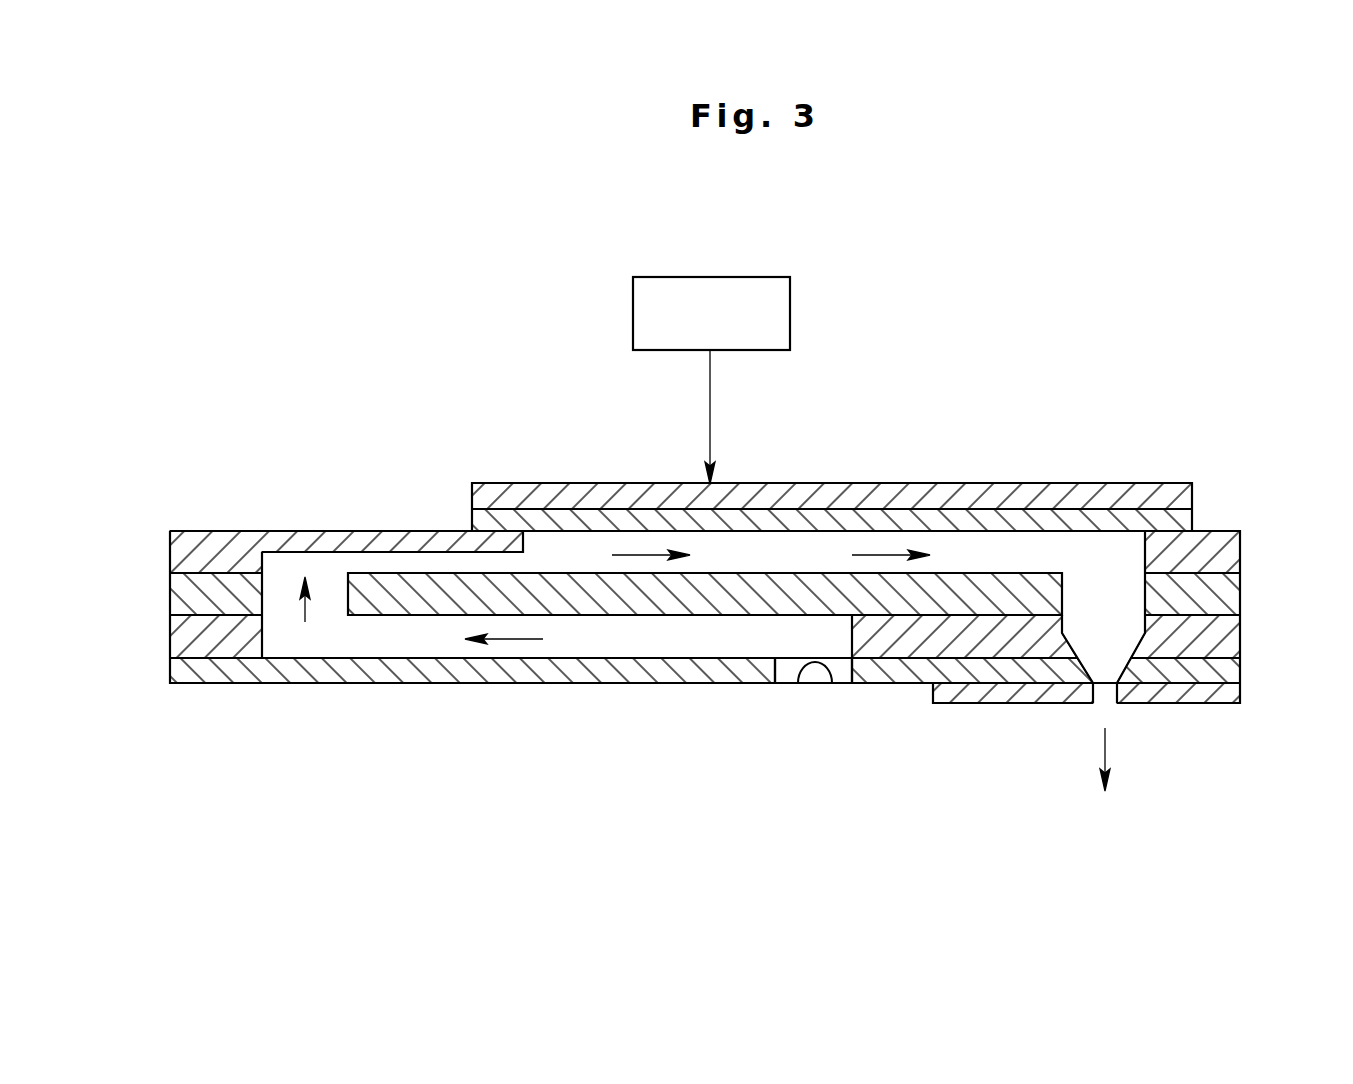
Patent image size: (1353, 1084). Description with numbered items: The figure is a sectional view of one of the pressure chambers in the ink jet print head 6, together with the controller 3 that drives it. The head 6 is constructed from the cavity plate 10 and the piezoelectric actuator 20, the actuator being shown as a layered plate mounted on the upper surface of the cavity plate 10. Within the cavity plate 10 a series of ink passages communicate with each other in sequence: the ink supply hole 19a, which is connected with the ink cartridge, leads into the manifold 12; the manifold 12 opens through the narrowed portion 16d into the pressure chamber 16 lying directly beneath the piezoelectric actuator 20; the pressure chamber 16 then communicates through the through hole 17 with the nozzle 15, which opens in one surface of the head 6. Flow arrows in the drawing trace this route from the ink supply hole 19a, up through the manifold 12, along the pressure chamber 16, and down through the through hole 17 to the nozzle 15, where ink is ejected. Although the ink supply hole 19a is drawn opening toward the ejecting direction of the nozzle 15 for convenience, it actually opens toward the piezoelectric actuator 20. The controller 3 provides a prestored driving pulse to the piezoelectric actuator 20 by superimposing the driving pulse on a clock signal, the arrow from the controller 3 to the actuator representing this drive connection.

The controller 3 is at (790, 307).
The head 6 is at (1258, 457).
The cavity plate 10 is at (135, 530).
The manifold 12 is at (343, 632).
The nozzle 15 is at (1105, 698).
The pressure chamber 16 is at (955, 556).
The narrowed portion 16d is at (485, 563).
The through hole 17 is at (1105, 610).
The ink supply hole 19a is at (822, 683).
The piezoelectric actuator 20 is at (898, 483).